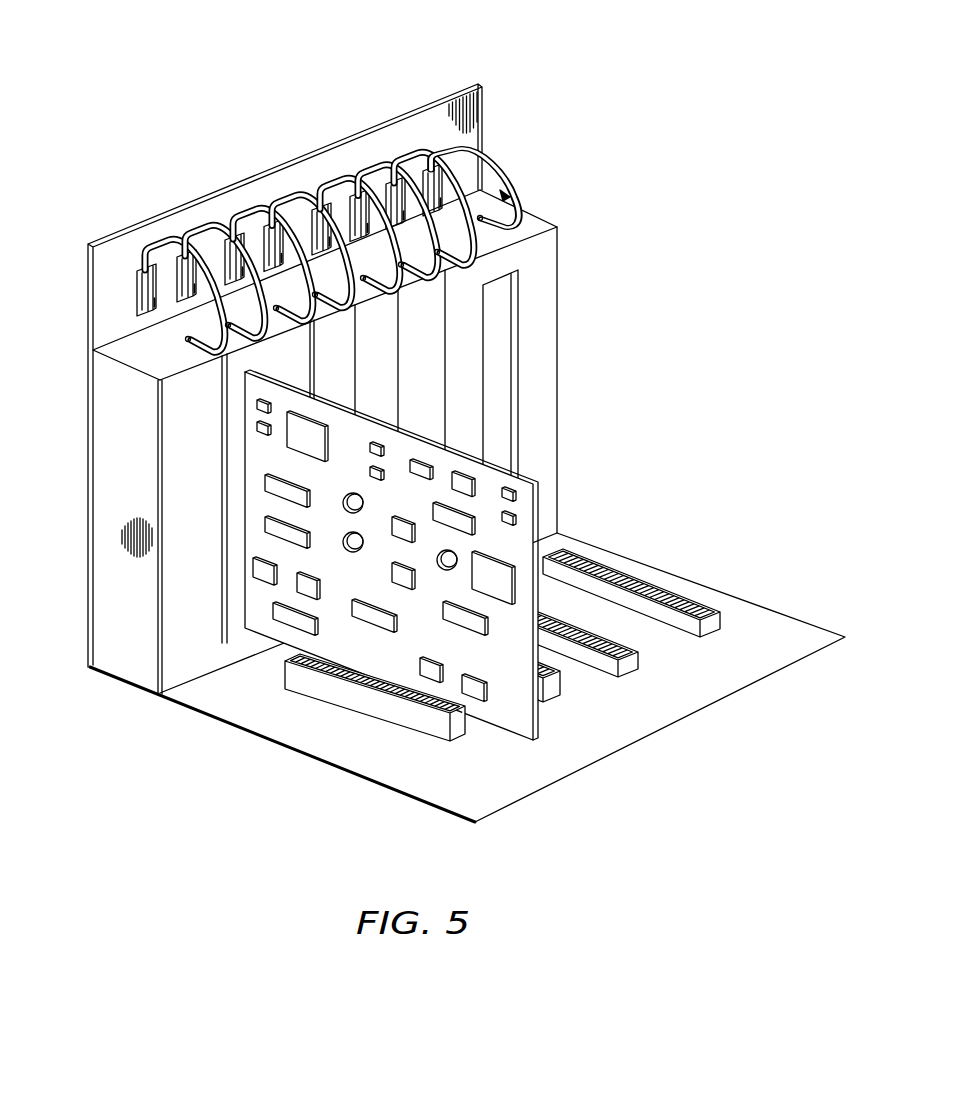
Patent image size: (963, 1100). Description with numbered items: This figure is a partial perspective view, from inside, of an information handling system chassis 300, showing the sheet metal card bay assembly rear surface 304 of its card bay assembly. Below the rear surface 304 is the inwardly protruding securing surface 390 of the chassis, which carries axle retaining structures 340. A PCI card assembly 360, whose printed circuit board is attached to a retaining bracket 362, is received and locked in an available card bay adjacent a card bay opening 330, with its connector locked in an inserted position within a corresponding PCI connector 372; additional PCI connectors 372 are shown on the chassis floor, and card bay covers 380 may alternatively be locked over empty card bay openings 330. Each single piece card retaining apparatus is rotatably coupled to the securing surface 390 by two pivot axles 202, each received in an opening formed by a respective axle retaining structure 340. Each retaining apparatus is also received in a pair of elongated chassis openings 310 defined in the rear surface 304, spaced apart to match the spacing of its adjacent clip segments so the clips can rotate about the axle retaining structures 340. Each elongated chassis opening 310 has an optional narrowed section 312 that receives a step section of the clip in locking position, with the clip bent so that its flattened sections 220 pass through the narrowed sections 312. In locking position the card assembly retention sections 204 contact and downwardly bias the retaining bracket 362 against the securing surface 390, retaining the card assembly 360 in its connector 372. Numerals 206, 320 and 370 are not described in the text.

The pivot axle 202 is at (215, 350).
The card assembly retention section 204 is at (481, 222).
The wire end 206 is at (483, 185).
The flattened section 220 is at (150, 247).
The information handling system chassis 300 is at (527, 88).
The card bay assembly rear surface 304 is at (480, 82).
The elongated chassis opening 310 is at (187, 238).
The narrowed section 312 is at (141, 272).
The housing wall 320 is at (92, 247).
The card bay opening 330 is at (500, 343).
The axle retaining structure 340 is at (490, 218).
The PCI card assembly 360 is at (365, 645).
The retaining bracket 362 is at (243, 342).
The guide rail 370 is at (215, 357).
The PCI connector 372 is at (393, 717).
The card bay cover 380 is at (426, 285).
The inwardly protruding securing surface 390 is at (528, 225).